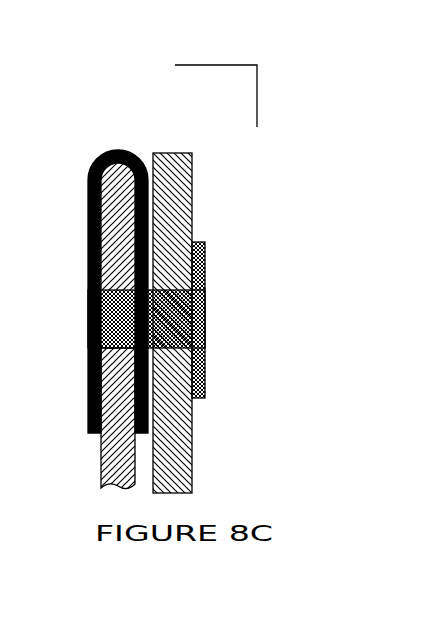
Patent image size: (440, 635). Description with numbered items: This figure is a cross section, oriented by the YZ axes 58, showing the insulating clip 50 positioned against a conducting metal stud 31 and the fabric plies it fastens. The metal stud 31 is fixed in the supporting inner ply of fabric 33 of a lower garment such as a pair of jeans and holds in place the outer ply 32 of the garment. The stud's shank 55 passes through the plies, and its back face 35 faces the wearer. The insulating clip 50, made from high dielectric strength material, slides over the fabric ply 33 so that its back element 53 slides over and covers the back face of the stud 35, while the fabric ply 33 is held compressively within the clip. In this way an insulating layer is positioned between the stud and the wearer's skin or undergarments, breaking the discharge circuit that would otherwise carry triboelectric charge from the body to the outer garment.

The insulating clip 50 is at (121, 150).
The back element 53 is at (87, 243).
The back face of the stud 35 is at (89, 288).
The supporting inner ply of fabric 33 is at (101, 455).
The outer ply 32 is at (181, 191).
The metal stud 31 is at (205, 313).
The shank of the stud 55 is at (205, 338).
The YZ axes 58 is at (257, 63).